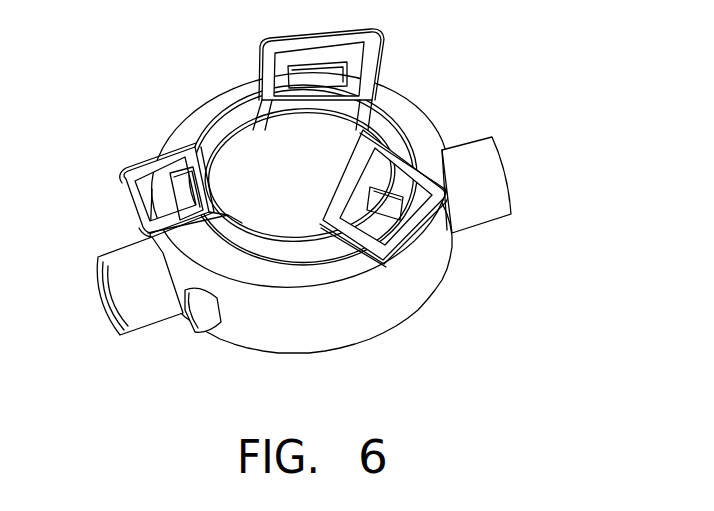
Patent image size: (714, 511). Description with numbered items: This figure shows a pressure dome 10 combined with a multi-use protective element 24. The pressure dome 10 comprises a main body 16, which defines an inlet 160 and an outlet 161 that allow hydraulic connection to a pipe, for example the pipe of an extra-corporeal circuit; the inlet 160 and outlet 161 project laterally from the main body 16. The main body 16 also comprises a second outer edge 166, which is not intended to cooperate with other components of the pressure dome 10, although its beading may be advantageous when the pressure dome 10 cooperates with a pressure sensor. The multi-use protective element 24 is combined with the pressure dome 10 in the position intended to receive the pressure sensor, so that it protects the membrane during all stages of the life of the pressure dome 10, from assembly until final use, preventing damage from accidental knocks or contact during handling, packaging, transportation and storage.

The pressure dome 10 is at (139, 95).
The main body 16 is at (397, 287).
The multi-use protective element 24 is at (374, 36).
The inlet 160 is at (107, 308).
The outlet 161 is at (492, 188).
The second outer edge 166 is at (412, 112).